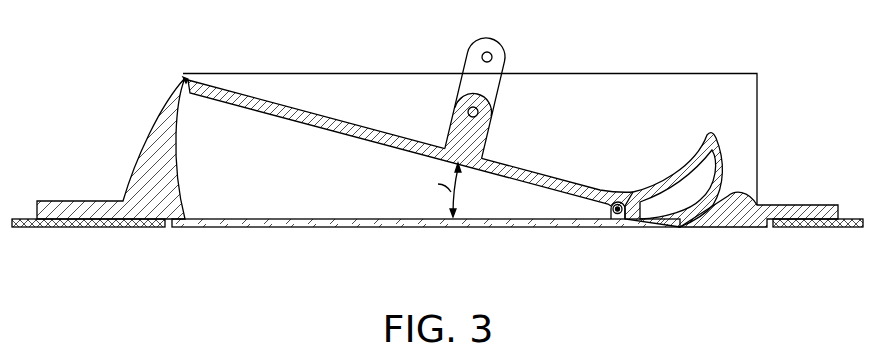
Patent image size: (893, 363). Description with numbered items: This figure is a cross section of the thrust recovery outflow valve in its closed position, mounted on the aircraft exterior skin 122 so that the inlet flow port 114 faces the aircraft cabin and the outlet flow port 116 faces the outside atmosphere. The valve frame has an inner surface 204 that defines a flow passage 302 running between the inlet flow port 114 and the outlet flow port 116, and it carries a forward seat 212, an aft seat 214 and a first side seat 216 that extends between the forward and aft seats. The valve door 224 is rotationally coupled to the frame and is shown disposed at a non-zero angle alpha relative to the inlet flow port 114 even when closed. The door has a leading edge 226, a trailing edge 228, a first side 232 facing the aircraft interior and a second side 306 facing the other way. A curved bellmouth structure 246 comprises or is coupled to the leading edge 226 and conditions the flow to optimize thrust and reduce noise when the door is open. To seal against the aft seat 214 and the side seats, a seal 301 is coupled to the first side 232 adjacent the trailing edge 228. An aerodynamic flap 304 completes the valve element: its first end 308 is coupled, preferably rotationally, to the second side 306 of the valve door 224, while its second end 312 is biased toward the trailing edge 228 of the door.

The inlet flow port 114 is at (393, 48).
The outlet flow port 116 is at (426, 247).
The aircraft exterior skin 122 is at (815, 230).
The inner surface 204 is at (146, 148).
The forward seat 212 is at (735, 210).
The aft seat 214 is at (176, 175).
The first side seat 216 is at (637, 83).
The valve door 224 is at (410, 143).
The leading edge 226 is at (722, 160).
The trailing edge 228 is at (210, 97).
The first side 232 is at (410, 120).
The bellmouth structure 246 is at (722, 140).
The seal 301 is at (184, 79).
The flow passage 302 is at (391, 205).
The aerodynamic flap 304 is at (267, 220).
The second side 306 is at (410, 143).
The first end 308 is at (617, 220).
The second end 312 is at (178, 228).